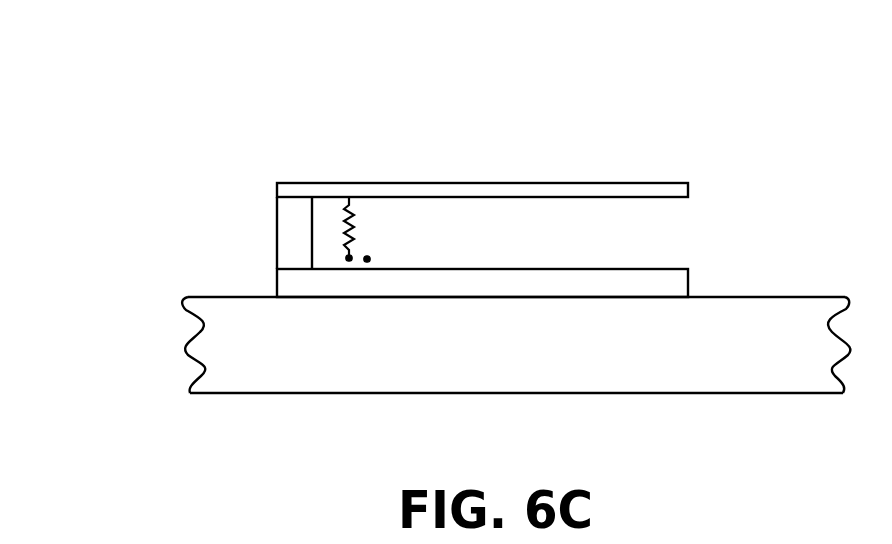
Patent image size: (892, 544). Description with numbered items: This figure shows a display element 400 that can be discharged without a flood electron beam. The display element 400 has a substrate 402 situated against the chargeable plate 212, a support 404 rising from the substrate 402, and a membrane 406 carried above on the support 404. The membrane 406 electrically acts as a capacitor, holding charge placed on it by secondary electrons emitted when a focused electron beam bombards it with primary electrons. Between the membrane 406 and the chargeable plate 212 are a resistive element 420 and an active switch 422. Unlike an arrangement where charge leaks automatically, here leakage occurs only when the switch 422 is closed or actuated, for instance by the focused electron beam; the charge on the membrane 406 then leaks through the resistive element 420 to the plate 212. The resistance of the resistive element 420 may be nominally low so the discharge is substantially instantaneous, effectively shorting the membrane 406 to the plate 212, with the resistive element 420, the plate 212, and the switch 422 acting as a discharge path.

The display element 400 is at (129, 77).
The chargeable plate 212 is at (533, 366).
The substrate 402 is at (690, 277).
The support 404 is at (285, 226).
The membrane 406 is at (690, 190).
The resistive element 420 is at (353, 228).
The active switch 422 is at (367, 262).